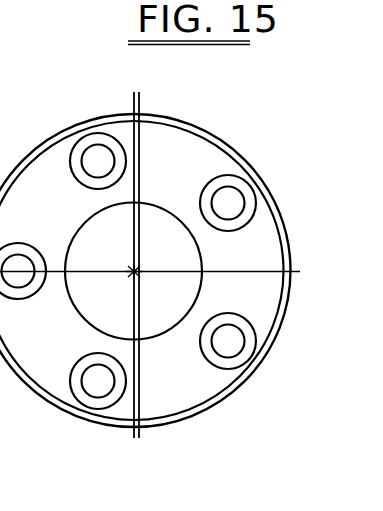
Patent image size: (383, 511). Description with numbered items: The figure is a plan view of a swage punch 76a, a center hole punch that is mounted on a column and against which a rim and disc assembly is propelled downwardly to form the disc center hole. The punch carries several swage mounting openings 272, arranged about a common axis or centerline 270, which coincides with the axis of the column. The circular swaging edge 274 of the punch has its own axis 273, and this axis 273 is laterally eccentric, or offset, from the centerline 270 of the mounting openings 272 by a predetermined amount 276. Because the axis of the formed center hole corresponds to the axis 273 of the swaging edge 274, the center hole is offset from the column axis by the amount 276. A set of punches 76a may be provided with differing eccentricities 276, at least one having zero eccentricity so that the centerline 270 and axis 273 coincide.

The swage punch 76a is at (258, 167).
The axis or centerline of the swage mounting openings 270 is at (133, 273).
The swage mounting openings 272 is at (88, 391).
The axis of swaging edge 273 is at (137, 272).
The swaging edge 274 is at (291, 255).
The predetermined amount of eccentricity 276 is at (162, 102).